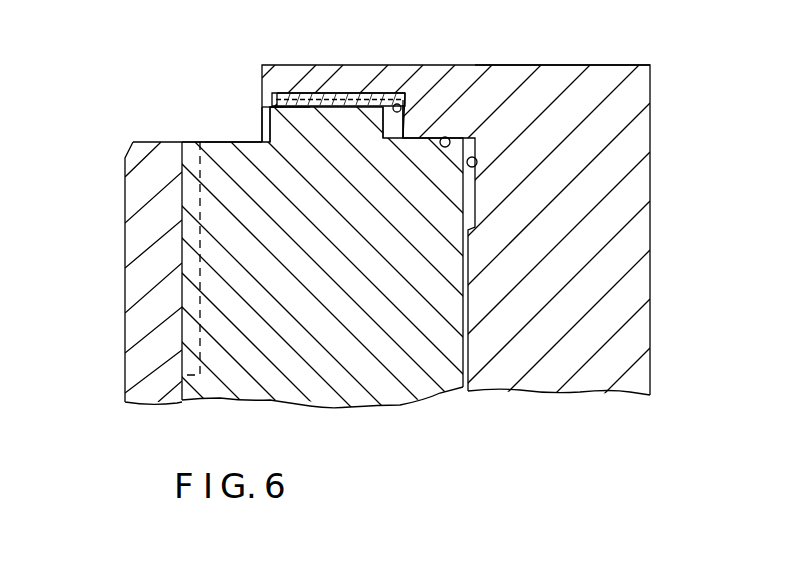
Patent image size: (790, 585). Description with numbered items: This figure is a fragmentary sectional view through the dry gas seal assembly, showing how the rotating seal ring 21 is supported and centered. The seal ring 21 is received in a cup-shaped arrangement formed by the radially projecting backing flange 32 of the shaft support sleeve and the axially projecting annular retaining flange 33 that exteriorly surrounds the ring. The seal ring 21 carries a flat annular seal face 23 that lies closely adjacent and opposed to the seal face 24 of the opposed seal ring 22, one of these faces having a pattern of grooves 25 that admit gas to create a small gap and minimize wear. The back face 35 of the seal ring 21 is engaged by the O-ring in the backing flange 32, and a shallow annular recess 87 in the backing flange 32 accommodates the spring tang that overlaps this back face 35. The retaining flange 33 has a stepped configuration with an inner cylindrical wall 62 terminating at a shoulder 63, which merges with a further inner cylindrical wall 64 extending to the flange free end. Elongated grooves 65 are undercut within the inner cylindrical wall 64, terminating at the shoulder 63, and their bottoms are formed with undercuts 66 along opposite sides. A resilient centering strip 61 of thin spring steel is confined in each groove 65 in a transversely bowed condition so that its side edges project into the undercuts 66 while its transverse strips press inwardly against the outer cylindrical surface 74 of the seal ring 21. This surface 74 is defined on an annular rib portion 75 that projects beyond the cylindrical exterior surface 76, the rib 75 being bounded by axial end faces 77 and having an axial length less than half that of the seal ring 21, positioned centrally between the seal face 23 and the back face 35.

The seal ring 21 is at (327, 373).
The seal ring 22 is at (140, 365).
The seal face 23 is at (178, 370).
The seal face 24 is at (185, 324).
The grooves 25 is at (197, 162).
The backing flange 32 is at (640, 178).
The annular retaining flange 33 is at (523, 97).
The back face 35 is at (464, 353).
The resilient centering strips 61 is at (355, 95).
The inner cylindrical wall 62 is at (446, 137).
The shoulder 63 is at (396, 104).
The inner cylindrical wall 64 is at (277, 103).
The grooves 65 is at (313, 90).
The undercuts 66 is at (400, 99).
The outer cylindrical surface 74 is at (287, 93).
The annular rib portion 75 is at (300, 123).
The cylindrical exterior surface 76 is at (207, 142).
The axial end faces 77 is at (266, 130).
The shallow annular recess 87 is at (477, 161).